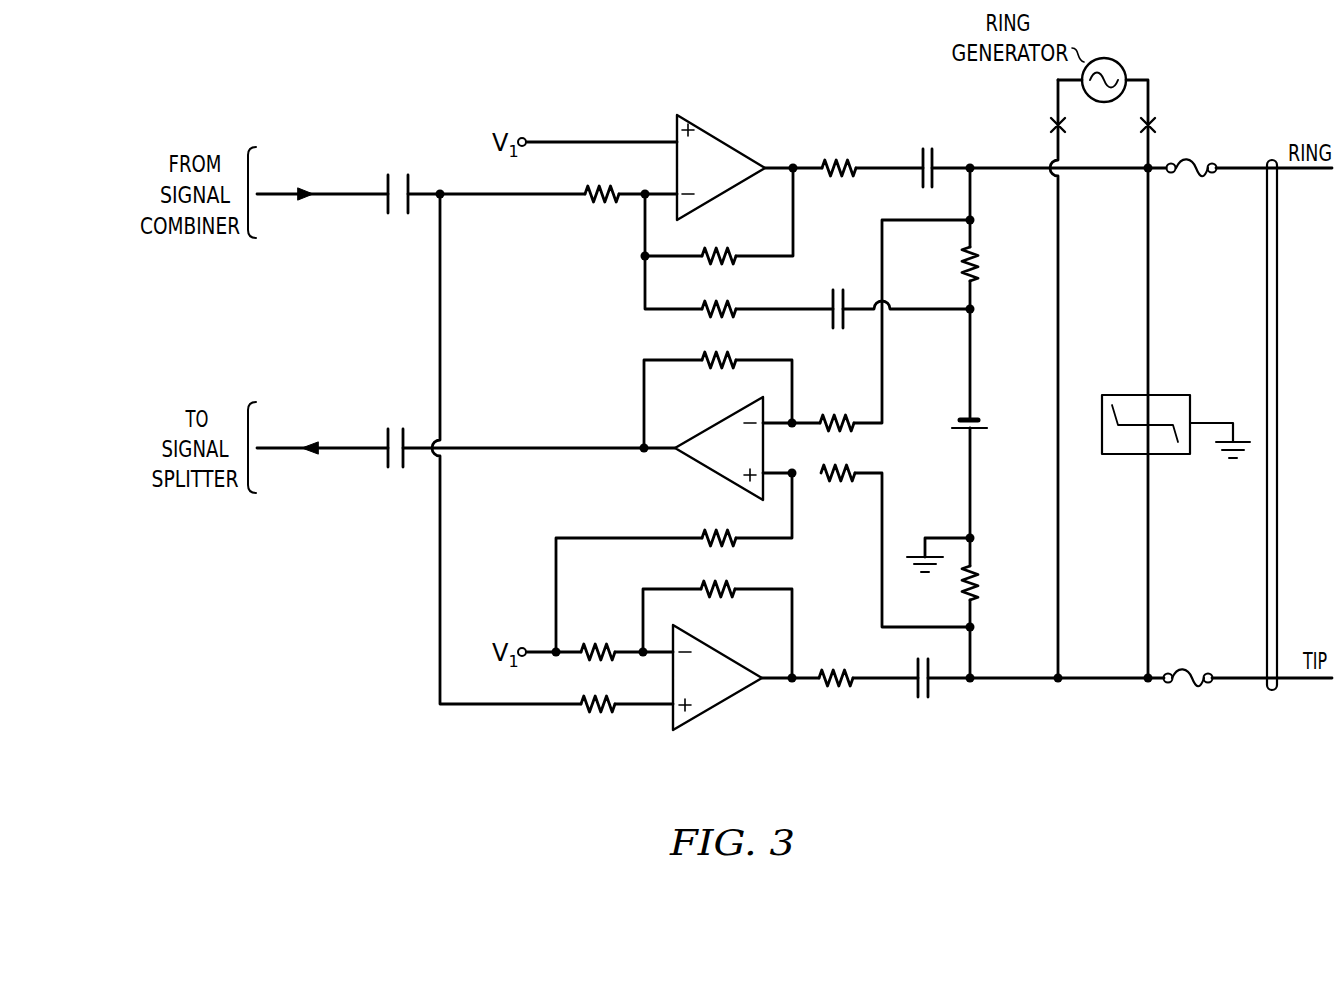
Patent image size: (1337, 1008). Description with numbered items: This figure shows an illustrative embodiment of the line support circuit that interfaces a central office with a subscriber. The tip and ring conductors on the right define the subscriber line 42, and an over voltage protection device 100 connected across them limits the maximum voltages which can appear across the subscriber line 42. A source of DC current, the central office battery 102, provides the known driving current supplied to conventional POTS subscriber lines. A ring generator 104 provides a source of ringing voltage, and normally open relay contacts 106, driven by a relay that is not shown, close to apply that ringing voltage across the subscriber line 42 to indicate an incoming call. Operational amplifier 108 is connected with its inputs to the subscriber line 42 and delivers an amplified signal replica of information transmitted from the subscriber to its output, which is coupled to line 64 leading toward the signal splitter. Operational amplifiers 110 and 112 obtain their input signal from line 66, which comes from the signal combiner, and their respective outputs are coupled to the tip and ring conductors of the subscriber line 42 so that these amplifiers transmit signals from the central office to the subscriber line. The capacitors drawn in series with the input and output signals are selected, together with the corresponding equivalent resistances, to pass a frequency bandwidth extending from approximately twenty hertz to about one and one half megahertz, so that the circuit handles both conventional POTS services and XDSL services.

The subscriber line 42 is at (1268, 690).
The line 64 is at (277, 453).
The line 66 is at (282, 199).
The over voltage protection device 100 is at (1156, 395).
The central office battery 102 is at (989, 424).
The ring generator 104 is at (1124, 64).
The normally open relay contacts 106 is at (1127, 140).
The operational amplifier 108 is at (725, 483).
The operational amplifier 110 is at (710, 712).
The operational amplifier 112 is at (703, 128).